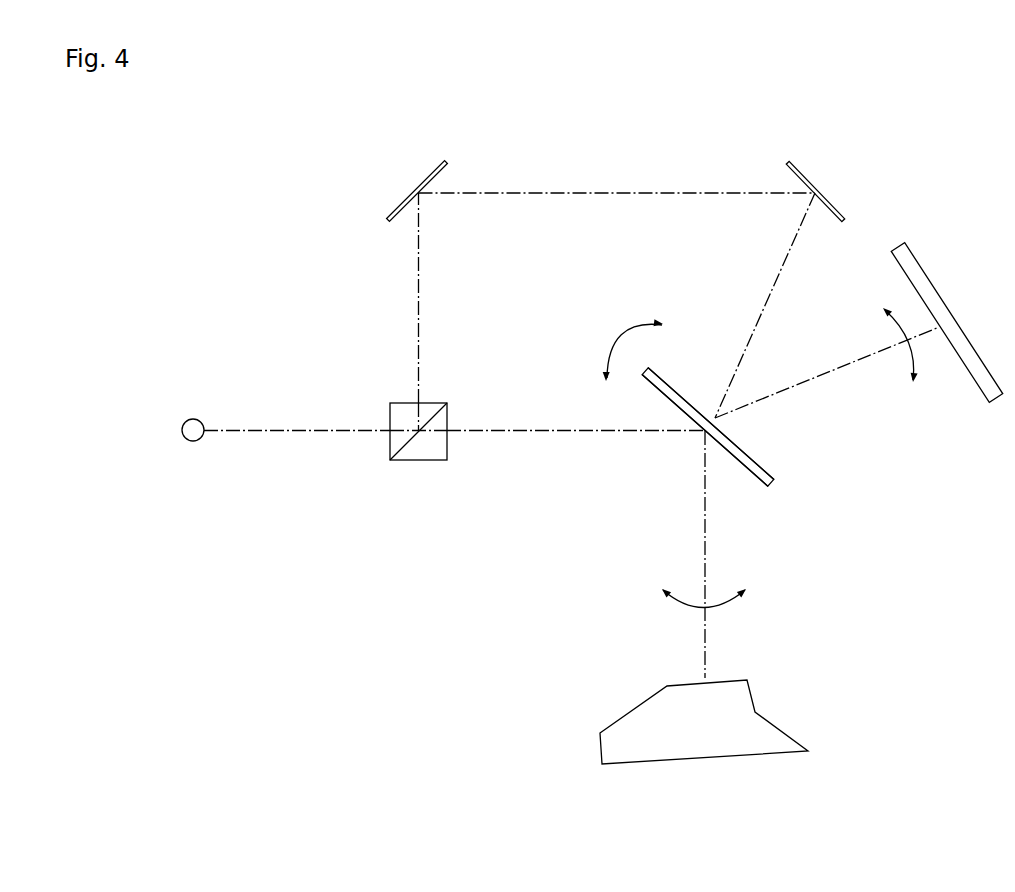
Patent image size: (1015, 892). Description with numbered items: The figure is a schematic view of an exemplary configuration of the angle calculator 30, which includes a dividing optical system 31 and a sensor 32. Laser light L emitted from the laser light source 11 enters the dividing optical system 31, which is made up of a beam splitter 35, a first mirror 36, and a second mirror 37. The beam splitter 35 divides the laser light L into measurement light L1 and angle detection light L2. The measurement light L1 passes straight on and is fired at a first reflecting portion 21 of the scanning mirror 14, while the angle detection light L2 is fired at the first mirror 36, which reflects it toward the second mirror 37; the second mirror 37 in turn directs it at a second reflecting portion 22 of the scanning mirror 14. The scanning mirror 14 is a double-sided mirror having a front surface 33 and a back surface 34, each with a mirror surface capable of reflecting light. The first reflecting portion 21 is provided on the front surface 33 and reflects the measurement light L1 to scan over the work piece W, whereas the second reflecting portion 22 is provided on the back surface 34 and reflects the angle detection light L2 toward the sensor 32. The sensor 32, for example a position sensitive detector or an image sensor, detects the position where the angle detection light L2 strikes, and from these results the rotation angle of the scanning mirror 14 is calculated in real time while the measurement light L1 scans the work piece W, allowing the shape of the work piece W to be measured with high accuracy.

The laser light source 11 is at (190, 443).
The laser light L is at (310, 433).
The beam splitter 35 is at (418, 462).
The dividing optical system 31 is at (392, 300).
The first mirror 36 is at (411, 191).
The angle detection light L2 is at (533, 190).
The angle calculator 30 is at (639, 168).
The second mirror 37 is at (822, 190).
The measurement light L1 is at (531, 434).
The scanning mirror 14 is at (776, 490).
The first reflecting portion 21 is at (693, 440).
The second reflecting portion 22 is at (727, 410).
The front surface 33 is at (733, 466).
The back surface 34 is at (758, 460).
The sensor 32 is at (979, 342).
The work piece W is at (778, 722).